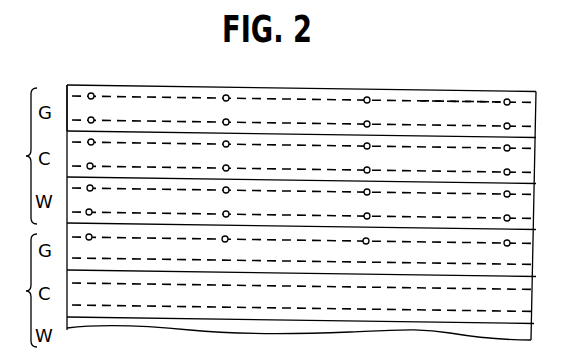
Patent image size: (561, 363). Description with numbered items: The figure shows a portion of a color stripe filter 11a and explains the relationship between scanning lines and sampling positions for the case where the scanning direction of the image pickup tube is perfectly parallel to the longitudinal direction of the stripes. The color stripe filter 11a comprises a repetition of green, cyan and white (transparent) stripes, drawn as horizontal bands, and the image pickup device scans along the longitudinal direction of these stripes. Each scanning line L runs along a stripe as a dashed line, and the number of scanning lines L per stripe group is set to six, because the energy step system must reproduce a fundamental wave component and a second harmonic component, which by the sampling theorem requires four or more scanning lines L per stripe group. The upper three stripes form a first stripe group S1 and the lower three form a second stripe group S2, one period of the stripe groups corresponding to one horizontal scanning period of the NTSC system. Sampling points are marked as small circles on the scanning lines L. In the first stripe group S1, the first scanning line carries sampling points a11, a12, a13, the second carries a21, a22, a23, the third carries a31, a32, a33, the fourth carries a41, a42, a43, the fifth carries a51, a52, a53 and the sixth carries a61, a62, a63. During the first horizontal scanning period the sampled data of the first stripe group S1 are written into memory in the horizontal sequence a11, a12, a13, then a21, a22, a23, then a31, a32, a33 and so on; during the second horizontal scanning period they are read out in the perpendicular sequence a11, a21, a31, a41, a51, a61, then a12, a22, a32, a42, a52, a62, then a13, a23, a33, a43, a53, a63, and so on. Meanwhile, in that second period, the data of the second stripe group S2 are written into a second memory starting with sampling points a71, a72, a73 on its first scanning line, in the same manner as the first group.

The color stripe filter 11a is at (60, 73).
The scanning line L is at (470, 102).
The first stripe group S1 is at (20, 156).
The second stripe group S2 is at (20, 290).
The sampling point a11 is at (90, 93).
The sampling point a12 is at (226, 95).
The sampling point a13 is at (367, 97).
The sampling point a21 is at (93, 118).
The sampling point a22 is at (229, 119).
The sampling point a23 is at (369, 121).
The sampling point a31 is at (93, 139).
The sampling point a32 is at (229, 141).
The sampling point a33 is at (370, 143).
The sampling point a41 is at (98, 156).
The sampling point a42 is at (228, 165).
The sampling point a43 is at (370, 167).
The sampling point a51 is at (92, 186).
The sampling point a52 is at (223, 193).
The sampling point a53 is at (364, 195).
The sampling point a61 is at (91, 209).
The sampling point a62 is at (228, 211).
The sampling point a63 is at (369, 214).
The sampling point a71 is at (89, 240).
The sampling point a72 is at (225, 242).
The sampling point a73 is at (366, 244).